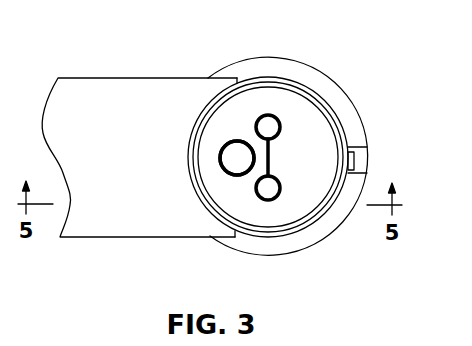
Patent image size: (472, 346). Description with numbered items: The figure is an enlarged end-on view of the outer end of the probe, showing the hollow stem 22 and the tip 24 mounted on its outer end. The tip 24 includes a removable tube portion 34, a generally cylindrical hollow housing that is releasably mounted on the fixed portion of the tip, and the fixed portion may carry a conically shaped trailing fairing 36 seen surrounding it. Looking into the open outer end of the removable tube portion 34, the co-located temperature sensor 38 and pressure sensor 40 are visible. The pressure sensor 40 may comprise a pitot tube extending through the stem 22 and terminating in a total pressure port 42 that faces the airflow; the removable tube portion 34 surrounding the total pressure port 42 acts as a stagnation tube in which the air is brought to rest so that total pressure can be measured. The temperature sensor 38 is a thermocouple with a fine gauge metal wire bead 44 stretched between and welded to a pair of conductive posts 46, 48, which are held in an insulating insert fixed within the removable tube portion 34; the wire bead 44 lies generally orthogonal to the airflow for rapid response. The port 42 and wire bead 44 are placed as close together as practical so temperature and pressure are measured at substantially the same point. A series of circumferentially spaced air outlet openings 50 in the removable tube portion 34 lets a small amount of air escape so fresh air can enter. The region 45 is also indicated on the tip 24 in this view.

The stem 22 is at (108, 108).
The tip 24 is at (342, 71).
The removable tube portion 34 is at (335, 138).
The trailing fairing 36 is at (337, 100).
The temperature sensor 38 is at (292, 168).
The pressure sensor 40 is at (216, 179).
The total pressure port 42 is at (232, 141).
The wire bead 44 is at (357, 173).
The inner face 45 is at (298, 200).
The conductive post 46 is at (268, 114).
The conductive post 48 is at (263, 203).
The air outlet openings 50 is at (354, 158).